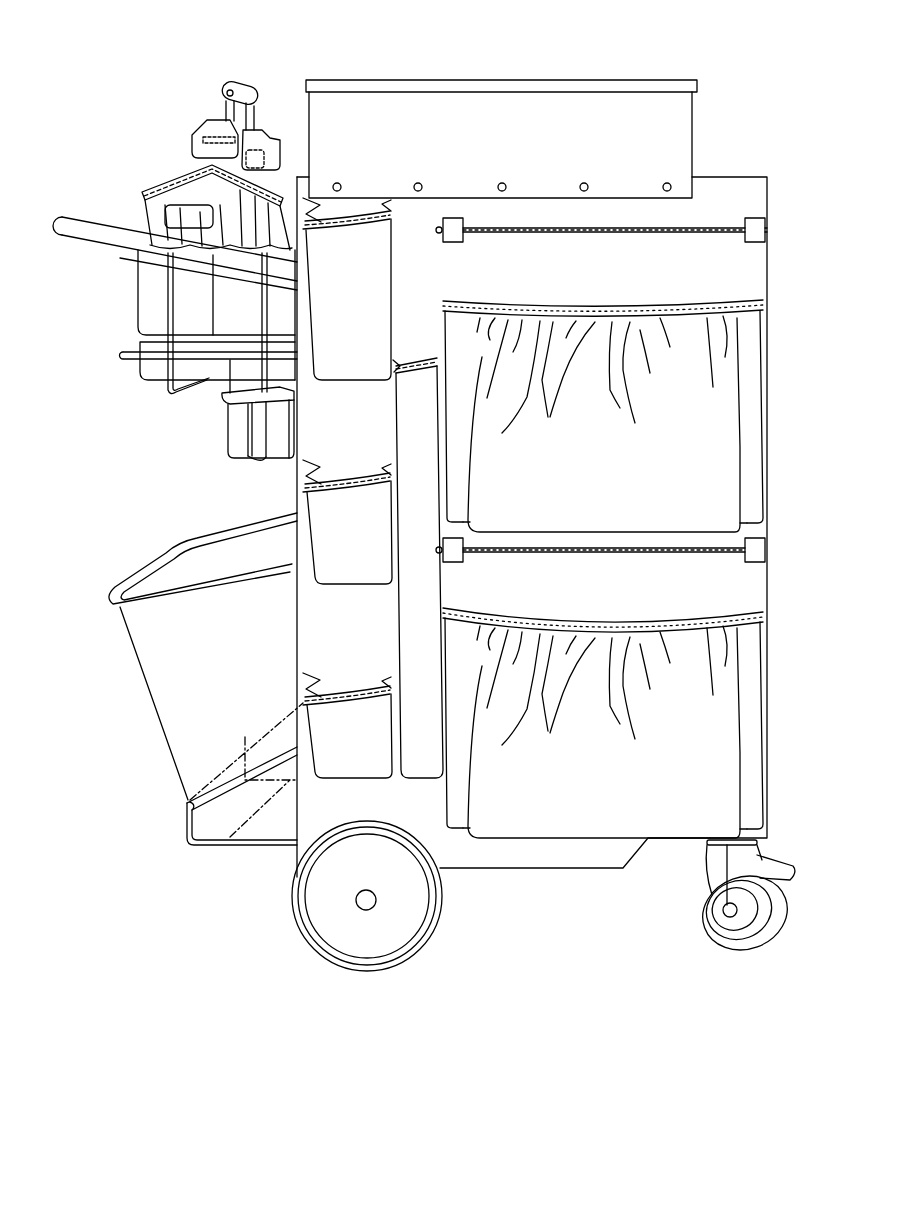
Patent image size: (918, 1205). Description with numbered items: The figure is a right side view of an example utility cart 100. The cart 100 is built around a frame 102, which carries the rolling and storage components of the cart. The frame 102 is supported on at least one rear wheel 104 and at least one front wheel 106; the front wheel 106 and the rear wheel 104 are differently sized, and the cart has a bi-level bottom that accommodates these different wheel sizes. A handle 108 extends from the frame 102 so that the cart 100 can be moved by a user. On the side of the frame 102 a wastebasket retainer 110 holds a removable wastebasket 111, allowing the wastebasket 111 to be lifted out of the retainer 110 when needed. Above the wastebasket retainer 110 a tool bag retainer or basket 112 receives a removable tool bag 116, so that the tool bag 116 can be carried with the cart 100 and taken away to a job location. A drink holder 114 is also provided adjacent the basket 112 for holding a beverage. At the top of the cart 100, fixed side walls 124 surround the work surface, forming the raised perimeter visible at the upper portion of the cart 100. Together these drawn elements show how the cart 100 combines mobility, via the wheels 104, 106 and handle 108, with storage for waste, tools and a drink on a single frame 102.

The utility cart 100 is at (130, 454).
The frame 102 is at (615, 868).
The rear wheel 104 is at (298, 925).
The front wheel 106 is at (720, 923).
The handle 108 is at (127, 250).
The wastebasket retainer 110 is at (187, 840).
The removable wastebasket 111 is at (128, 650).
The tool bag retainer or basket 112 is at (127, 362).
The drink holder 114 is at (228, 460).
The removable tool bag 116 is at (187, 118).
The fixed side walls 124 is at (370, 80).